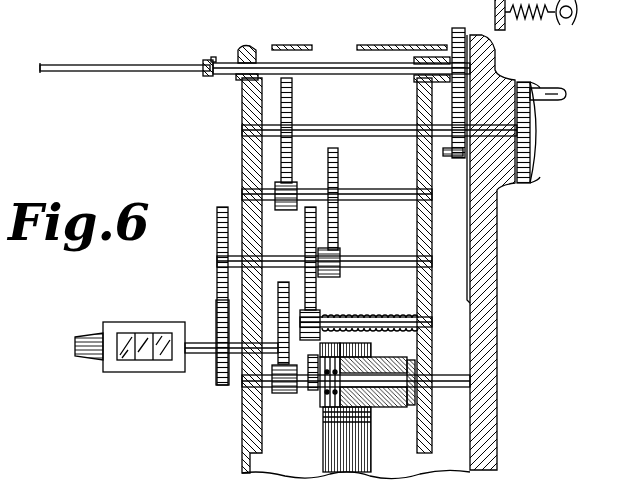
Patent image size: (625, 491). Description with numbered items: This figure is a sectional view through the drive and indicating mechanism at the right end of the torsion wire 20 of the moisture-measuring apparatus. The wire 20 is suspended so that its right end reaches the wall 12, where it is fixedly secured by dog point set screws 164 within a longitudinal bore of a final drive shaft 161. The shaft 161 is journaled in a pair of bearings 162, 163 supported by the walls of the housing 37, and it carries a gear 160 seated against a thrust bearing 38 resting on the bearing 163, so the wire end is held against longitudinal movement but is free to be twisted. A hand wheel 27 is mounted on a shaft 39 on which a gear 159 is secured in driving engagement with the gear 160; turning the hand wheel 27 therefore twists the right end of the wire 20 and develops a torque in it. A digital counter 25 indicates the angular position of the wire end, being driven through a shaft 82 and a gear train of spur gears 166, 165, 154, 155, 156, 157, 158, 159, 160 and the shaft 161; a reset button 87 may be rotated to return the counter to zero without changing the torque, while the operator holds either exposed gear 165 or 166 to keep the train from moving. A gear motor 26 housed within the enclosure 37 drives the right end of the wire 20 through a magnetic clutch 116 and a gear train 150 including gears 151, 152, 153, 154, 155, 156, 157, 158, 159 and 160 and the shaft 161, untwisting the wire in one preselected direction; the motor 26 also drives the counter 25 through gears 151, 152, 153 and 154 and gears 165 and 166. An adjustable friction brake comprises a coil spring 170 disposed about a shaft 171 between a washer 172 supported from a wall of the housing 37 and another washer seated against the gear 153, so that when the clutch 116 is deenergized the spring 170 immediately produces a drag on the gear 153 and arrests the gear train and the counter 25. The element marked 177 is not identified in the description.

The wall 12 is at (495, 250).
The torsion wire 20 is at (60, 66).
The digital counter 25 is at (143, 322).
The gear motor 26 is at (340, 455).
The hand wheel 27 is at (520, 88).
The housing 37 is at (242, 447).
The thrust bearing 38 is at (436, 265).
The shaft 39 is at (396, 126).
The shaft 82 is at (203, 355).
The reset button 87 is at (87, 333).
The magnetic clutch 116 is at (310, 403).
The gear train 150 is at (382, 225).
The gear 151 is at (275, 395).
The gear 152 is at (320, 298).
The gear 153 is at (322, 314).
The spur gear 154 is at (306, 244).
The spur gear 155 is at (340, 255).
The spur gear 156 is at (338, 178).
The spur gear 157 is at (294, 180).
The spur gear 158 is at (292, 110).
The gear 159 is at (448, 156).
The gear 160 is at (450, 30).
The final drive shaft 161 is at (345, 64).
The bearing 162 is at (246, 54).
The bearing 163 is at (414, 80).
The dog point set screws 164 is at (209, 61).
The spur gear 165 is at (209, 225).
The spur gear 166 is at (210, 315).
The coil spring 170 is at (366, 303).
The shaft 171 is at (272, 312).
The washer 172 is at (412, 312).
The collar 177 is at (320, 343).